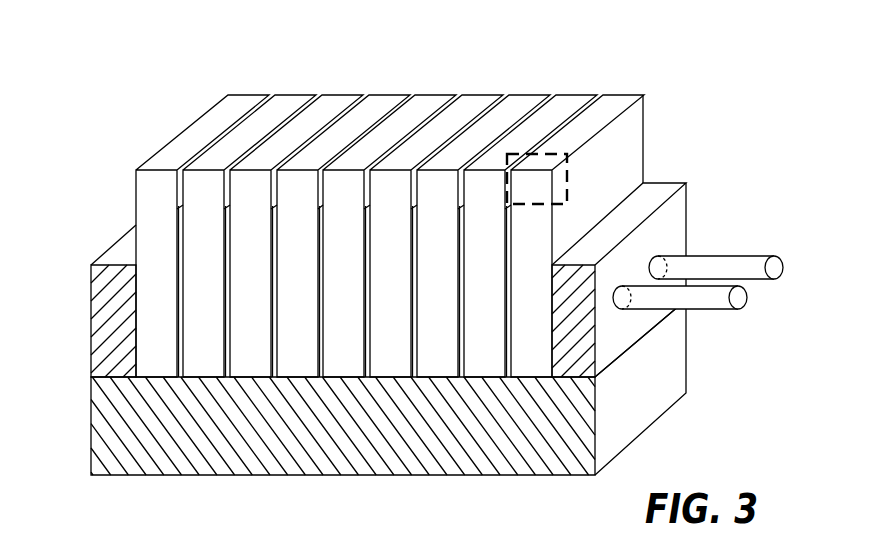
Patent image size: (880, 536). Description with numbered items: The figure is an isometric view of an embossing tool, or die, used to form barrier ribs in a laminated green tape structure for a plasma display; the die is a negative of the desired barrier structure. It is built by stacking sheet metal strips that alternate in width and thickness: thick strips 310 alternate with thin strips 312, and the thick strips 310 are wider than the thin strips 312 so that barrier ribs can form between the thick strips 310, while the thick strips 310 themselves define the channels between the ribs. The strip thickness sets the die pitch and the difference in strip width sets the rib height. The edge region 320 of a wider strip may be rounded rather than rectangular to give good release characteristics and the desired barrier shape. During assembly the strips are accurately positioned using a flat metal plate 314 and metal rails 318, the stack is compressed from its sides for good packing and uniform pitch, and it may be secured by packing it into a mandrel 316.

The thick strips 310 is at (195, 122).
The thin strips 312 is at (228, 243).
The flat metal plate 314 is at (115, 424).
The mandrel 316 is at (645, 227).
The metal rails 318 is at (697, 292).
The edge region 320 is at (542, 155).